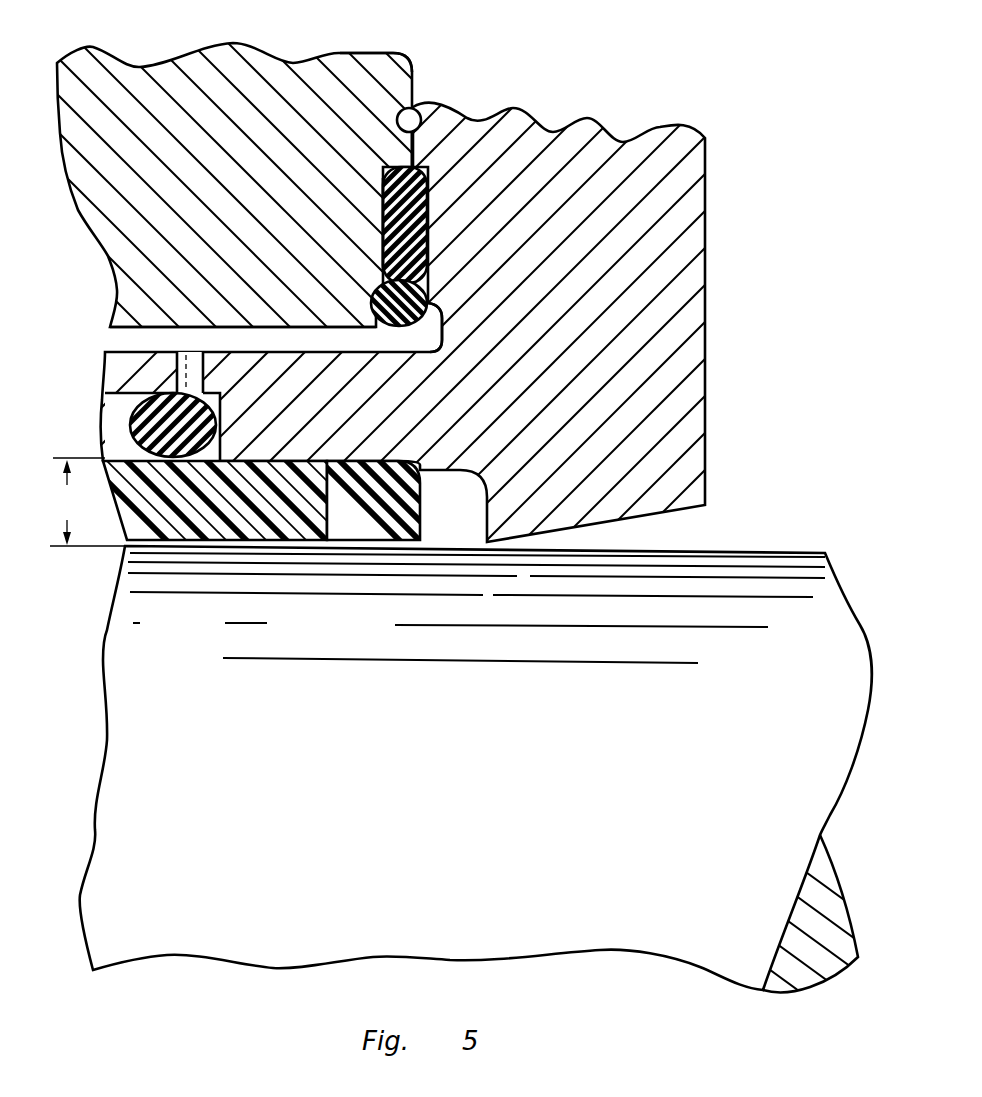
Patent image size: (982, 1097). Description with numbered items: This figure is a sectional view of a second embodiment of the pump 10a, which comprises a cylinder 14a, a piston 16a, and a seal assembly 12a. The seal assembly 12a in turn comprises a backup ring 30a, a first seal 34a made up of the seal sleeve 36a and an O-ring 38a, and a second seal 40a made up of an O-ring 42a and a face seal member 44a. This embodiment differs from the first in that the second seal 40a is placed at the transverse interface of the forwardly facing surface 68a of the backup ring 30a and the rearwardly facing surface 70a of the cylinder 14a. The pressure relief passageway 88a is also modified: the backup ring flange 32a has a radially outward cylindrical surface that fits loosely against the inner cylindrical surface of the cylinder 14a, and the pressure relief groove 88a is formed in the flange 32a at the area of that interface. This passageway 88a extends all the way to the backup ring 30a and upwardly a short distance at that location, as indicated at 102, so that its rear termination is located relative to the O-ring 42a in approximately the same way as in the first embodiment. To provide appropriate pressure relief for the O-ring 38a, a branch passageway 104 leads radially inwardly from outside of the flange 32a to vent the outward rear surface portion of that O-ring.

The pump 10a is at (491, 530).
The seal assembly 12a is at (243, 298).
The cylinder 14a is at (397, 56).
The piston 16a is at (480, 748).
The backup ring 30a is at (491, 314).
The backup ring flange 32a is at (330, 500).
The first seal 34a is at (258, 578).
The seal sleeve 36a is at (207, 540).
The O-ring 38a is at (217, 428).
The second seal 40a is at (452, 211).
The O-ring 42a is at (428, 290).
The face seal member 44a is at (383, 183).
The forwardly facing surface 68a is at (418, 107).
The rearwardly facing surface 70a is at (410, 158).
The pressure relief passageway 88a is at (212, 325).
The upward extension of passageway 102 is at (450, 321).
The branch passageway 104 is at (205, 375).